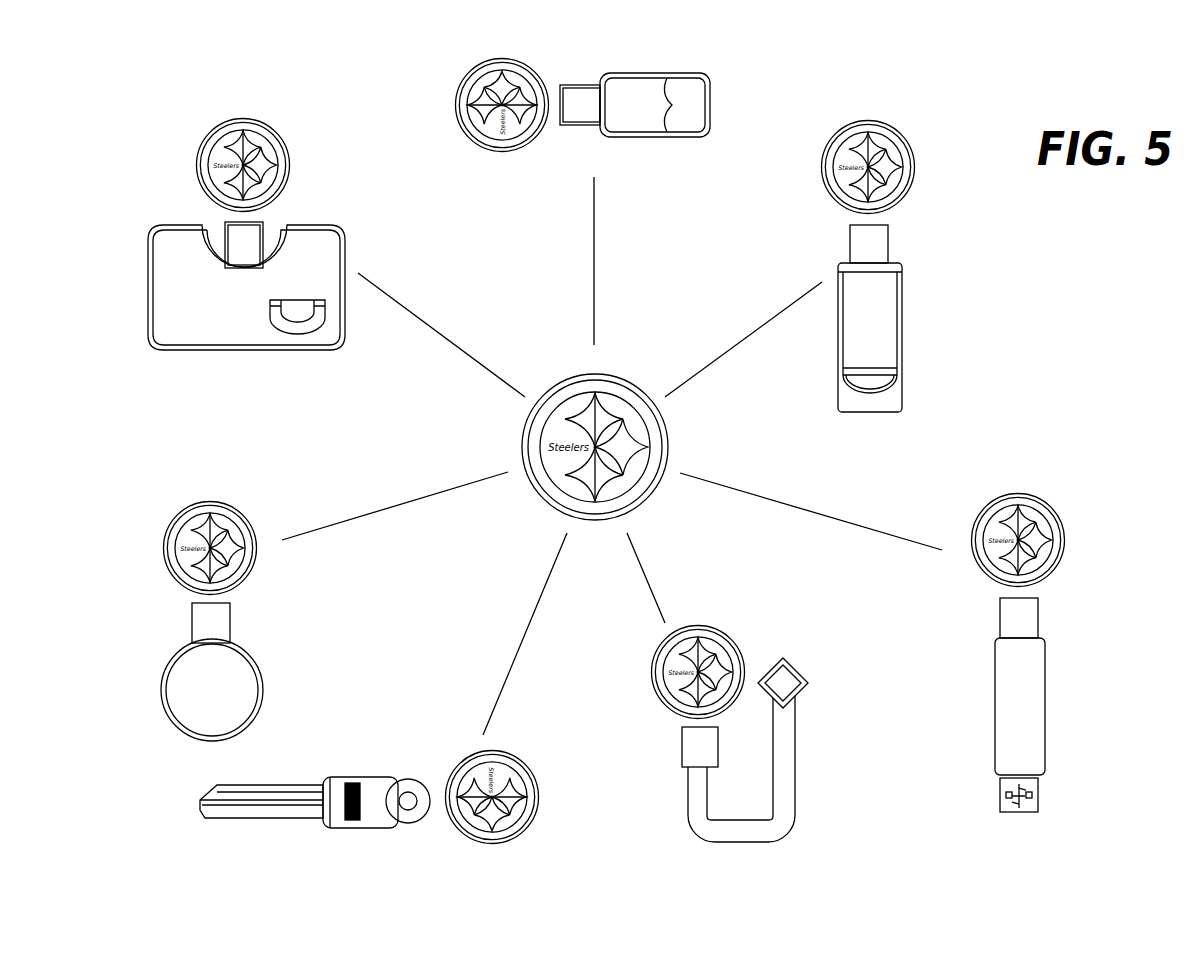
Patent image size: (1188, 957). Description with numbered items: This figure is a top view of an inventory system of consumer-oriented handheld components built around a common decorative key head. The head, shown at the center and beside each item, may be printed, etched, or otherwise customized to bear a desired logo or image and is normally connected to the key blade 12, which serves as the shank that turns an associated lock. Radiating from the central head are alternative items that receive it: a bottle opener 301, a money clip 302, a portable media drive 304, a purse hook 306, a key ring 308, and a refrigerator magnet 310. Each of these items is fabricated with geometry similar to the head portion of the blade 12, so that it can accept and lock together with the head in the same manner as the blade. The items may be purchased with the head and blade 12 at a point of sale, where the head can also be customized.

The blade 12 is at (355, 780).
The bottle opener 301 is at (643, 137).
The money clip 302 is at (902, 391).
The portable media drive 304 is at (1045, 697).
The purse hook 306 is at (795, 745).
The key ring 308 is at (262, 678).
The refrigerator magnet 310 is at (343, 342).